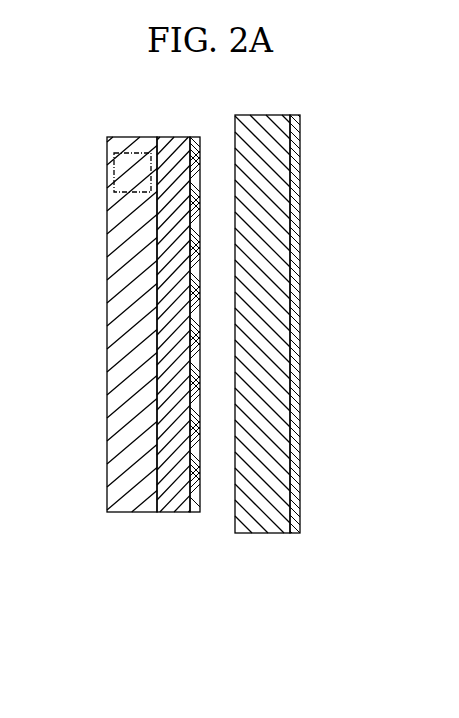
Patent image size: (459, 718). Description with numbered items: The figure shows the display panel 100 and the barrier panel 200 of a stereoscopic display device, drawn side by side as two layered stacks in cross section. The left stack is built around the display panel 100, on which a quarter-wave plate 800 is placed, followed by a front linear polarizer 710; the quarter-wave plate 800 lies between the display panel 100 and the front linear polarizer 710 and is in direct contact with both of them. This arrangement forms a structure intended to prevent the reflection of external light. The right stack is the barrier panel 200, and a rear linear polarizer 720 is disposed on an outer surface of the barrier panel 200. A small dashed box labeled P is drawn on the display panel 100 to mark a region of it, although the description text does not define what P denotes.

The display panel 100 is at (133, 497).
The quarter-wave plate 800 is at (170, 497).
The front linear polarizer 710 is at (194, 500).
The barrier panel 200 is at (263, 520).
The rear linear polarizer 720 is at (293, 530).
The pixel region P is at (131, 152).